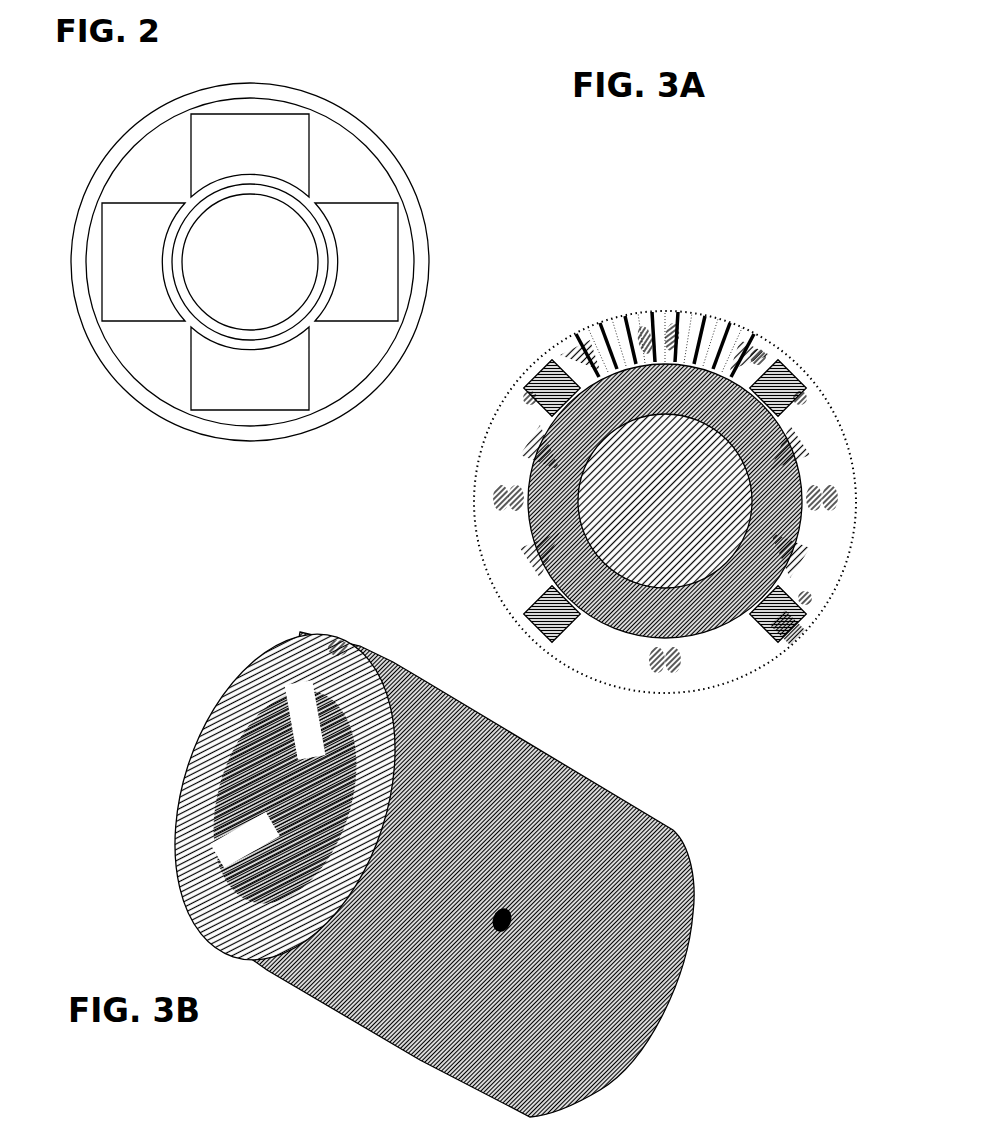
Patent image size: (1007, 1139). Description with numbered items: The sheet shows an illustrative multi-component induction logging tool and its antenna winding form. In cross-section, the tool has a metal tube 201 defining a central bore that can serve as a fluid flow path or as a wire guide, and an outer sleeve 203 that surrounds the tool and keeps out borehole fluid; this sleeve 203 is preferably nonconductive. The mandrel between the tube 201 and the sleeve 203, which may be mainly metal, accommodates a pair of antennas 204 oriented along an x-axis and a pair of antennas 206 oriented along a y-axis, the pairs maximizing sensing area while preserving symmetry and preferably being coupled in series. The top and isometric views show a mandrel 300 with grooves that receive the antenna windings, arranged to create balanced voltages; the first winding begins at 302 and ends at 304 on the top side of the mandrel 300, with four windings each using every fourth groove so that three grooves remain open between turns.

In FIG. 2, the metal tube 201 is at (304, 204).
In FIG. 2, the outer sleeve 203 is at (360, 402).
In FIG. 2, the pair of antennas 204 is at (252, 372).
In FIG. 2, the pair of antennas 206 is at (371, 286).
In FIG. 3A, the mandrel 300 is at (752, 657).
In FIG. 3B, the mandrel 300 is at (683, 853).
In FIG. 3A, the first winding beginning 302 is at (762, 352).
In FIG. 3B, the first winding beginning 302 is at (340, 643).
In FIG. 3A, the first winding ending 304 is at (583, 370).
In FIG. 3B, the first winding ending 304 is at (238, 705).